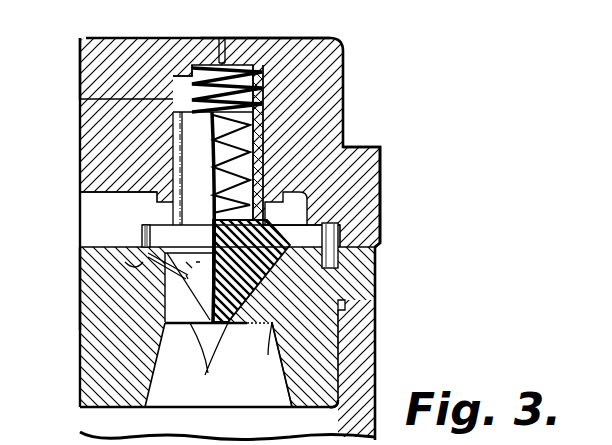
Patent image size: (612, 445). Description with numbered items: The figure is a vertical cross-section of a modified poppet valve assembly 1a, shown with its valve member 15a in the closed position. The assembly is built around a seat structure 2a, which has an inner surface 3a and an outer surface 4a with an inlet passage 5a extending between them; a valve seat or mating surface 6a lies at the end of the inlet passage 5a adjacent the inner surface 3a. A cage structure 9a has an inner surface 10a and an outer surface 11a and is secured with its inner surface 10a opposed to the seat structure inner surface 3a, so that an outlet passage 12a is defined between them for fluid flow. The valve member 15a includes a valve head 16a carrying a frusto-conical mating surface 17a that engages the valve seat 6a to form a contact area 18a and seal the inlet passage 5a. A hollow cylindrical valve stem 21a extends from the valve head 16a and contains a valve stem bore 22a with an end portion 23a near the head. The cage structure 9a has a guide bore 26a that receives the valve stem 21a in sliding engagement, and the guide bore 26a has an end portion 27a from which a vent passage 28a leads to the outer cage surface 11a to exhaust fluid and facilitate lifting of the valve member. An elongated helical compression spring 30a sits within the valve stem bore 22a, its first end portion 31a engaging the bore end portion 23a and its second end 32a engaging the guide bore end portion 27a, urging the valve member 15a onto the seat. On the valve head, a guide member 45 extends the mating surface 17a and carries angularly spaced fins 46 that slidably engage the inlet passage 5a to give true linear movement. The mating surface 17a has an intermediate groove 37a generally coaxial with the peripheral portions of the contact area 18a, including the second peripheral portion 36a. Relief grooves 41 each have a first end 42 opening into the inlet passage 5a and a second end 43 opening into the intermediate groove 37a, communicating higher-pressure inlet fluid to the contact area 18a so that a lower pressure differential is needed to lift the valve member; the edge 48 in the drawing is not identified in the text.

The poppet valve assembly 1a is at (362, 82).
The seat structure 2a is at (377, 286).
The inner surface 3a is at (374, 240).
The outer surface 4a is at (133, 410).
The inlet passage 5a is at (284, 380).
The valve seat 6a is at (166, 271).
The cage structure 9a is at (382, 172).
The inner surface 10a is at (81, 193).
The outer surface 11a is at (276, 38).
The outlet passage 12a is at (83, 246).
The valve member 15a is at (262, 76).
The valve head 16a is at (271, 212).
The mating surface 17a is at (134, 257).
The contact area 18a is at (340, 247).
The valve stem 21a is at (266, 148).
The valve stem bore 22a is at (256, 125).
The end portion 23a is at (266, 188).
The guide bore 26a is at (80, 99).
The end portion 27a is at (172, 85).
The vent passage 28a is at (226, 60).
The helical compression spring 30a is at (264, 90).
The first end portion 31a is at (211, 216).
The second end 32a is at (185, 78).
The second peripheral portion 36a is at (81, 220).
The groove 37a is at (219, 268).
The relief grooves 41 is at (205, 247).
The first end 42 is at (188, 265).
The second end 43 is at (157, 228).
The guide member 45 is at (165, 300).
The fins 46 is at (218, 365).
The passage edge 48 is at (259, 345).